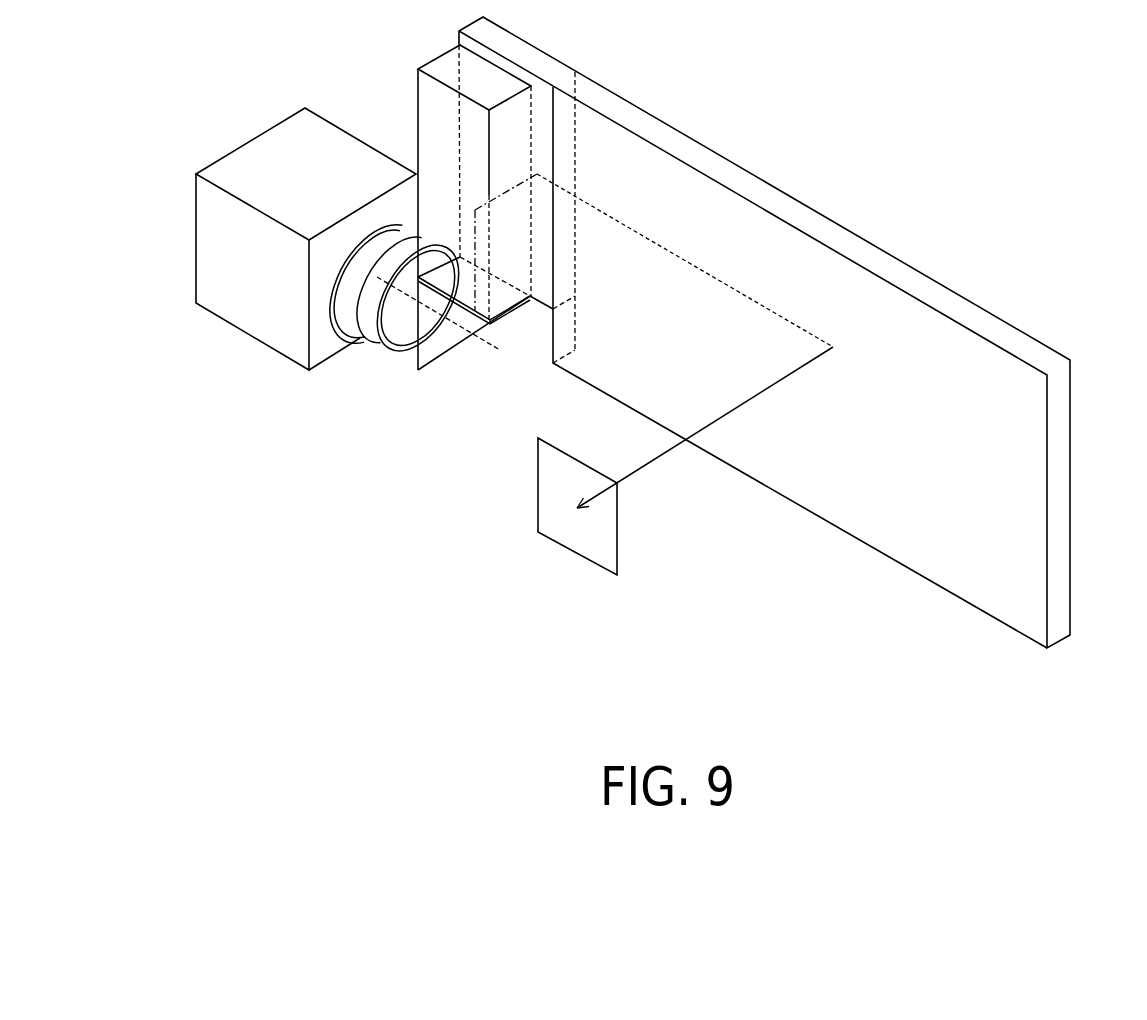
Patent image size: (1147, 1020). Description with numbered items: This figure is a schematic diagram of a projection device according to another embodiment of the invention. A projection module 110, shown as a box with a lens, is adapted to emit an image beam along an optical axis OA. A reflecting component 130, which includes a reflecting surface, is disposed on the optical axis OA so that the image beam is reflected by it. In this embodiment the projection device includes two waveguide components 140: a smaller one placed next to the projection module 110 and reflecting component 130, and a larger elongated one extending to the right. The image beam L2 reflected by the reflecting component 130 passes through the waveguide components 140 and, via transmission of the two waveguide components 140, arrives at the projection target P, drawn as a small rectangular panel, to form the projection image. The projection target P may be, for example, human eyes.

The projection module 110 is at (297, 153).
The reflecting component 130 is at (462, 354).
The waveguide component 140 is at (442, 66).
The optical axis OA is at (380, 292).
The image beam L2 is at (653, 462).
The projection target P is at (600, 548).